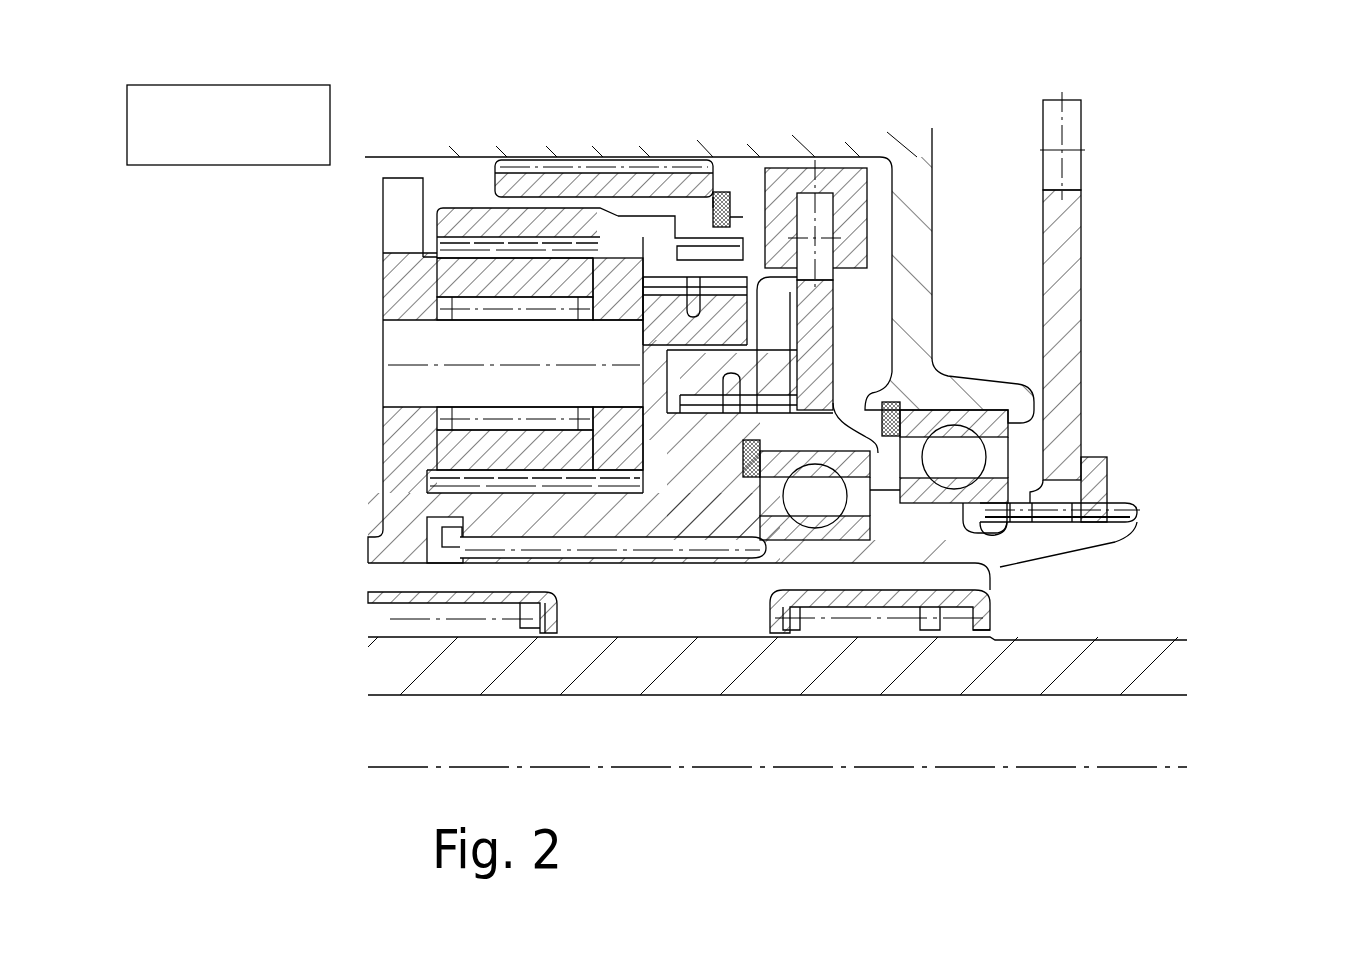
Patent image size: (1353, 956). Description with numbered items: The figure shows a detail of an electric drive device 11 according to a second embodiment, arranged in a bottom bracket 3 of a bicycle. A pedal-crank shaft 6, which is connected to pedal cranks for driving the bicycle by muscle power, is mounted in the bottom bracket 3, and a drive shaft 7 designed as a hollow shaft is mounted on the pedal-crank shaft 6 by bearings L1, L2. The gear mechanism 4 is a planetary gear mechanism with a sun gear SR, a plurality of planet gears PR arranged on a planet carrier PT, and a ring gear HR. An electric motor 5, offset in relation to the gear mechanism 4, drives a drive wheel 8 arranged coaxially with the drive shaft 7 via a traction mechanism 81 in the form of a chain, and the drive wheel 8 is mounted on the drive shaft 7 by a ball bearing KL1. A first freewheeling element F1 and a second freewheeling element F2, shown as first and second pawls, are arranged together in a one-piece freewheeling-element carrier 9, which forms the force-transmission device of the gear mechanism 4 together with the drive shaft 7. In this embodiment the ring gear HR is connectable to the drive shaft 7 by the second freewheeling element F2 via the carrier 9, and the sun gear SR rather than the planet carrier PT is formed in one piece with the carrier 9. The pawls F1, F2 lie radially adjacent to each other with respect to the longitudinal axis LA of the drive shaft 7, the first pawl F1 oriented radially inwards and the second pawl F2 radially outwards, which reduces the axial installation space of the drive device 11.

The bottom bracket 3 is at (1202, 133).
The gear mechanism 4 is at (166, 378).
The electric motor 5 is at (228, 125).
The pedal-crank shaft 6 is at (1107, 682).
The drive shaft 7 is at (968, 561).
The drive wheel 8 is at (827, 197).
The traction mechanism 81 is at (813, 190).
The one-piece freewheeling-element carrier 9 is at (768, 315).
The electric drive device 11 is at (1185, 530).
The ring gear HR is at (470, 218).
The planet carrier PT is at (418, 298).
The planet gears PR is at (470, 440).
The sun gear SR is at (487, 513).
The ball bearing KL1 is at (1033, 490).
The first freewheeling element F1 is at (713, 400).
The second freewheeling element F2 is at (712, 282).
The bearing L1 is at (370, 635).
The bearing L2 is at (900, 620).
The longitudinal axis LA is at (1128, 770).